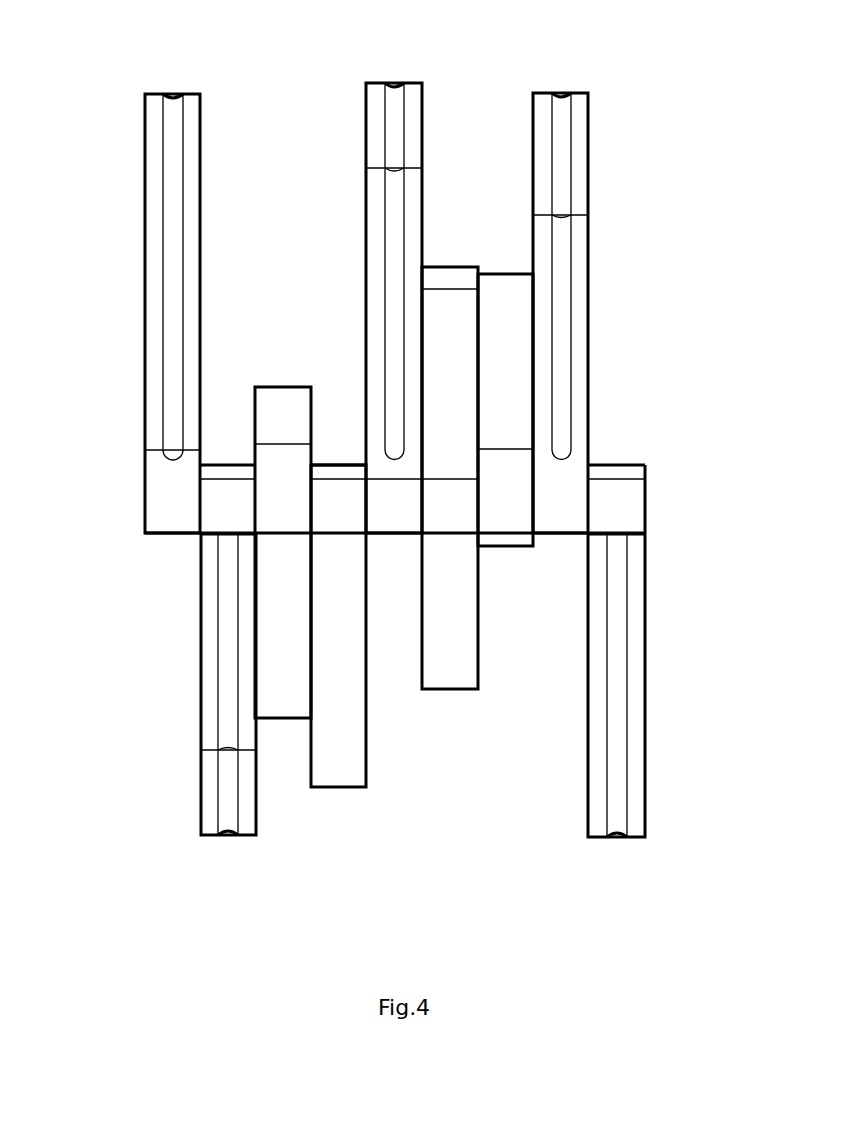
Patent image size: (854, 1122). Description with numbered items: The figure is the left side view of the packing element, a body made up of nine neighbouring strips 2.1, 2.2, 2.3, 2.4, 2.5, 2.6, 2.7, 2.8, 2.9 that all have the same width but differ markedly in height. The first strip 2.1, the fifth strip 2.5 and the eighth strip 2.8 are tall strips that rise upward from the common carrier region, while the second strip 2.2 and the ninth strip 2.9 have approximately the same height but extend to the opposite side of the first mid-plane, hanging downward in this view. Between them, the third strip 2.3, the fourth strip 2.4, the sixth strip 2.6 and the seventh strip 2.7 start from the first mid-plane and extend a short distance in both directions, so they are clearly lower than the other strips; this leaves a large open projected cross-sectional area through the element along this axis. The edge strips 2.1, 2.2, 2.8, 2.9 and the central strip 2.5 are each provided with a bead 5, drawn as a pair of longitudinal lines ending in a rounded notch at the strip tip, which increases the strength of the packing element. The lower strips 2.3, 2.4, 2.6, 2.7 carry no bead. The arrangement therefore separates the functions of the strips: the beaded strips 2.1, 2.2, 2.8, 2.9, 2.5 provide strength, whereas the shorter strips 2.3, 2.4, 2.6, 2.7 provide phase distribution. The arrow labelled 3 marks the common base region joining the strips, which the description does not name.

The connecting beam / carrier 3 is at (137, 495).
The first strip 2.1 is at (143, 206).
The second strip 2.2 is at (198, 788).
The third strip 2.3 is at (283, 386).
The fourth strip 2.4 is at (340, 789).
The fifth strip 2.5 is at (410, 83).
The sixth strip 2.6 is at (450, 691).
The seventh strip 2.7 is at (512, 273).
The eighth strip 2.8 is at (583, 93).
The ninth strip 2.9 is at (647, 742).
The bead 5 is at (172, 96).